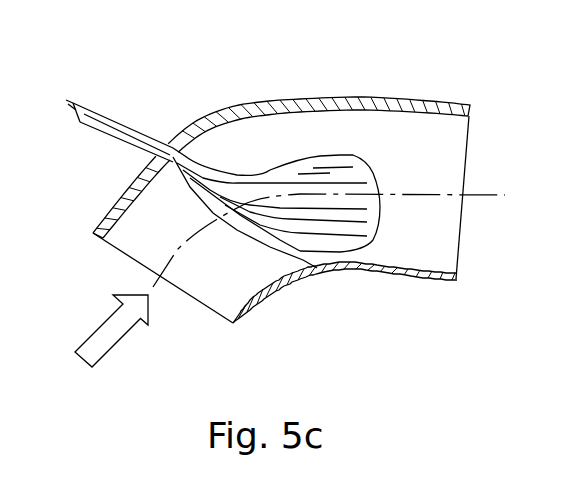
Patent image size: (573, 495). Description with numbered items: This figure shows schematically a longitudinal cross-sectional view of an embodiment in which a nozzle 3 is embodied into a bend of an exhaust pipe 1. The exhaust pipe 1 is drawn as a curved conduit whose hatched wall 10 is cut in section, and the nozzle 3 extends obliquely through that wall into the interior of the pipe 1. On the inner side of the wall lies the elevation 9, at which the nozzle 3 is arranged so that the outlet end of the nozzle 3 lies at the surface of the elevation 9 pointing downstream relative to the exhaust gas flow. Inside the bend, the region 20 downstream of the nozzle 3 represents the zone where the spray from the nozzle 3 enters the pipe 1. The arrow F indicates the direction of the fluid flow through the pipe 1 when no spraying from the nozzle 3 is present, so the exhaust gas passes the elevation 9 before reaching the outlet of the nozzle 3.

The exhaust pipe 1 is at (352, 91).
The nozzle 3 is at (141, 124).
The elevation 9 is at (148, 187).
The wall of the tubular body 10 is at (238, 90).
The expanded bladder / balloon 20 is at (375, 235).
The force direction arrow F is at (92, 331).